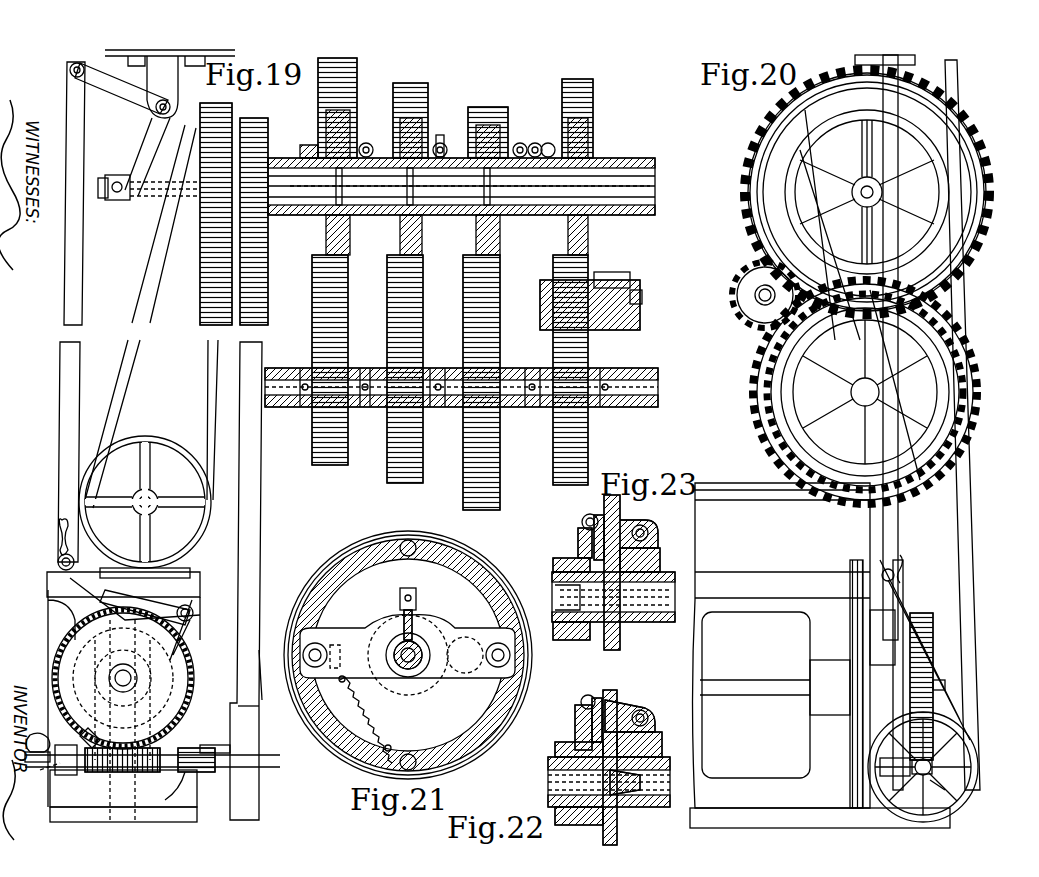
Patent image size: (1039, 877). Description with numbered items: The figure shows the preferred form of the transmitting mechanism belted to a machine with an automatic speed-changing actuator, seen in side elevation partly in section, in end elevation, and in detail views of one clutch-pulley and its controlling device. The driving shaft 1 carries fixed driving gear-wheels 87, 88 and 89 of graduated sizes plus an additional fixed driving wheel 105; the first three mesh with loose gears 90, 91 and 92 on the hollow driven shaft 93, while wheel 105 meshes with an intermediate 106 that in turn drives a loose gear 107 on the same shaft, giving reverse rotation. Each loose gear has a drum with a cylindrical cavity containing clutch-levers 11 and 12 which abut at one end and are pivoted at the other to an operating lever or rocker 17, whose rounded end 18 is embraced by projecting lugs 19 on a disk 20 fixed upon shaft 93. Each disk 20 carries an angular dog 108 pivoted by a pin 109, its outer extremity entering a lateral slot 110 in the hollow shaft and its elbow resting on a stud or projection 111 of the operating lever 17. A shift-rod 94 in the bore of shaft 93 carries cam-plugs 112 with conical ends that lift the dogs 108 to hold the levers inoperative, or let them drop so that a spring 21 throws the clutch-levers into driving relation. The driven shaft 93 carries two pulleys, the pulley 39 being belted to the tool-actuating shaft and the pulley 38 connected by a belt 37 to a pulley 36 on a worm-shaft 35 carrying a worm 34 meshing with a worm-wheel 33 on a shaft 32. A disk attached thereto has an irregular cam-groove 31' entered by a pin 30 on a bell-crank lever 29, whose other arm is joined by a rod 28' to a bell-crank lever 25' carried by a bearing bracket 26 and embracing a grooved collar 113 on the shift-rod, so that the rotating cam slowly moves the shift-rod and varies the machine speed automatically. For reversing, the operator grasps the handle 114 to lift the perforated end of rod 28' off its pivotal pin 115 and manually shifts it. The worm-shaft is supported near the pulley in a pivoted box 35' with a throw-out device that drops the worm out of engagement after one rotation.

In FIG. 19, the driving shaft 1 is at (650, 378).
In FIG. 21, the clutch-lever 11 is at (417, 632).
In FIG. 21, the clutch-lever 12 is at (408, 655).
In FIG. 21, the operating lever or rocker 17 is at (378, 630).
In FIG. 23, the operating lever or rocker 17 is at (578, 538).
In FIG. 22, the operating lever or rocker 17 is at (575, 735).
In FIG. 19, the rounded end of operating lever 18 is at (271, 655).
In FIG. 19, the projecting lugs 19 is at (302, 580).
In FIG. 21, the projecting lugs 19 is at (292, 560).
In FIG. 19, the disk 20 is at (368, 142).
In FIG. 22, the disk 20 is at (608, 690).
In FIG. 21, the spring 21 is at (372, 719).
In FIG. 19, the bell-crank lever 25' is at (119, 90).
In FIG. 19, the bearing bracket 26 is at (172, 104).
In FIG. 19, the rod 28' is at (54, 312).
In FIG. 20, the rod 28' is at (885, 347).
In FIG. 19, the bell-crank lever 29 is at (145, 592).
In FIG. 20, the bell-crank lever 29 is at (885, 675).
In FIG. 19, the pin 30 is at (148, 686).
In FIG. 19, the cam-groove 31' is at (123, 720).
In FIG. 20, the shaft 32 is at (782, 645).
In FIG. 19, the worm-wheel 33 is at (196, 668).
In FIG. 20, the worm-wheel 33 is at (940, 642).
In FIG. 19, the worm 34 is at (135, 772).
In FIG. 19, the worm-shaft 35 is at (77, 774).
In FIG. 20, the worm-shaft 35 is at (943, 756).
In FIG. 19, the box 35' is at (196, 747).
In FIG. 19, the pulley 36 is at (262, 808).
In FIG. 20, the pulley 36 is at (955, 712).
In FIG. 19, the belt 37 is at (262, 512).
In FIG. 20, the belt 37 is at (970, 640).
In FIG. 19, the pulley 38 is at (278, 258).
In FIG. 20, the pulley 38 is at (930, 128).
In FIG. 19, the pulley 39 is at (185, 268).
In FIG. 20, the pulley 39 is at (935, 182).
In FIG. 19, the driving gear-wheel 87 is at (312, 468).
In FIG. 20, the driving gear-wheel 87 is at (780, 378).
In FIG. 19, the driving gear-wheel 88 is at (387, 486).
In FIG. 20, the driving gear-wheel 88 is at (768, 405).
In FIG. 19, the driving gear-wheel 89 is at (463, 505).
In FIG. 20, the driving gear-wheel 89 is at (755, 438).
In FIG. 19, the loose gear 90 is at (357, 62).
In FIG. 20, the loose gear 90 is at (978, 265).
In FIG. 19, the loose gear 91 is at (422, 95).
In FIG. 19, the loose gear 92 is at (496, 120).
In FIG. 19, the hollow driven shaft 93 is at (668, 165).
In FIG. 23, the hollow driven shaft 93 is at (665, 630).
In FIG. 22, the hollow driven shaft 93 is at (660, 748).
In FIG. 19, the shift-rod 94 is at (104, 178).
In FIG. 21, the shift-rod 94 is at (425, 675).
In FIG. 19, the fixed driving wheel 105 is at (588, 468).
In FIG. 19, the intermediate 106 is at (591, 302).
In FIG. 20, the intermediate 106 is at (736, 300).
In FIG. 19, the loose gear 107 is at (600, 82).
In FIG. 19, the angular dog 108 is at (441, 143).
In FIG. 21, the angular dog 108 is at (418, 645).
In FIG. 22, the angular dog 108 is at (622, 705).
In FIG. 19, the pin 109 is at (442, 132).
In FIG. 19, the lateral slot 110 is at (312, 150).
In FIG. 23, the lateral slot 110 is at (660, 560).
In FIG. 21, the stud or projection 111 is at (414, 590).
In FIG. 23, the stud or projection 111 is at (595, 514).
In FIG. 22, the stud or projection 111 is at (594, 698).
In FIG. 19, the cam-plug 112 is at (345, 215).
In FIG. 22, the cam-plug 112 is at (645, 780).
In FIG. 19, the grooved collar 113 is at (135, 198).
In FIG. 19, the handle 114 is at (60, 548).
In FIG. 20, the handle 114 is at (902, 580).
In FIG. 19, the pivotal pin 115 is at (58, 568).
In FIG. 20, the pivotal pin 115 is at (882, 570).